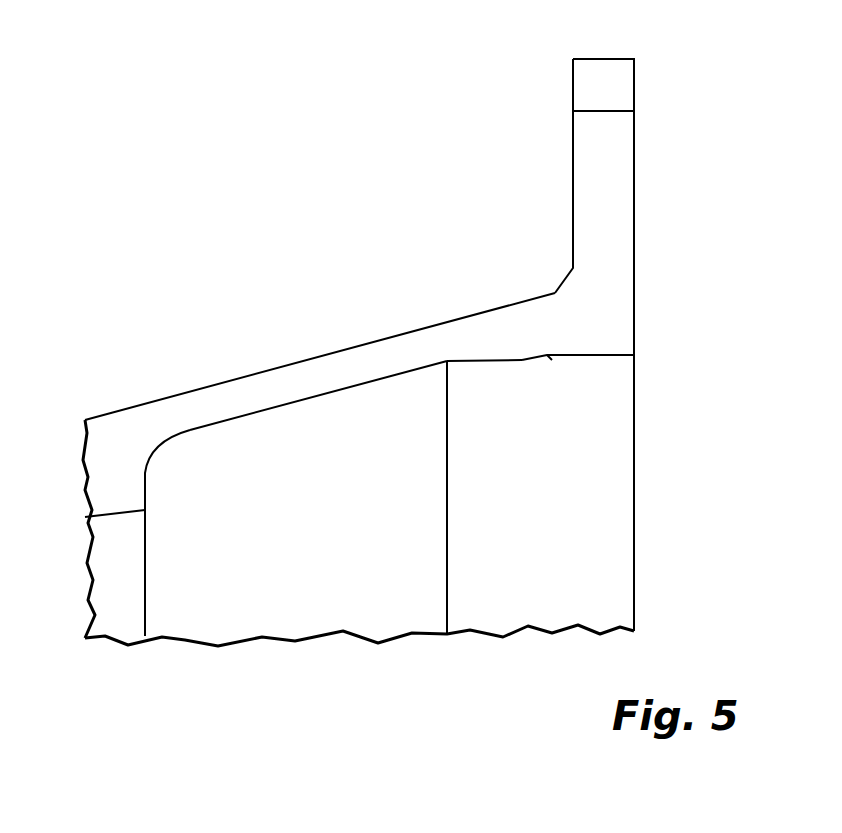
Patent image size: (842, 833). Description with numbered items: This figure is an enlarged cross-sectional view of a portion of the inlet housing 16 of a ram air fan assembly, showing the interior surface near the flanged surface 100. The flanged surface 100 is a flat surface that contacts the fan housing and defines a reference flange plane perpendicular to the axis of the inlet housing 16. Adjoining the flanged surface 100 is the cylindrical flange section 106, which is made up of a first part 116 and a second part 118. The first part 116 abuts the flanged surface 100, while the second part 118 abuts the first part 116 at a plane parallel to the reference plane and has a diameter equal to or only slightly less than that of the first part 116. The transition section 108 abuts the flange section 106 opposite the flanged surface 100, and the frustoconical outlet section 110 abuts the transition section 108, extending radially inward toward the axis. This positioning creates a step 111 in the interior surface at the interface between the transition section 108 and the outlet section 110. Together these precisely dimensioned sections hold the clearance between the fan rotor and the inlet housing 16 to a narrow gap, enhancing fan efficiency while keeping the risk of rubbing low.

The inlet housing 16 is at (160, 131).
The flanged surface 100 is at (634, 175).
The flange section 106 is at (556, 368).
The transition section 108 is at (256, 412).
The outlet section 110 is at (117, 517).
The step 111 is at (146, 473).
The first part 116 is at (609, 355).
The second part 118 is at (478, 361).